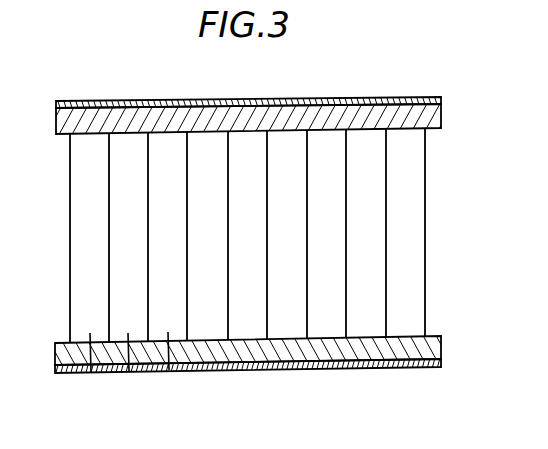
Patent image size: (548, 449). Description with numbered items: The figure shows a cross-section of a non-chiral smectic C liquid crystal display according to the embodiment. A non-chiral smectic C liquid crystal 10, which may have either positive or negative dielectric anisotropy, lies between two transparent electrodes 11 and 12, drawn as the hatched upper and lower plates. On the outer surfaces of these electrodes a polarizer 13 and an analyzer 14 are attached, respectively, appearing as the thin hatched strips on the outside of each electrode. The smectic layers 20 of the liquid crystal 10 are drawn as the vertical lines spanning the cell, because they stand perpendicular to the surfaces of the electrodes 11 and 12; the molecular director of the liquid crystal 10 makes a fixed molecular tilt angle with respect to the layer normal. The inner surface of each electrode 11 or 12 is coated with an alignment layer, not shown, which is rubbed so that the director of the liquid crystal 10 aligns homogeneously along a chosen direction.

The analyzer 14 is at (443, 99).
The transparent electrode 12 is at (445, 113).
The non-chiral smectic C liquid crystal 10 is at (451, 333).
The transparent electrode 11 is at (445, 346).
The polarizer 13 is at (447, 368).
The smectic layers 20 is at (164, 403).